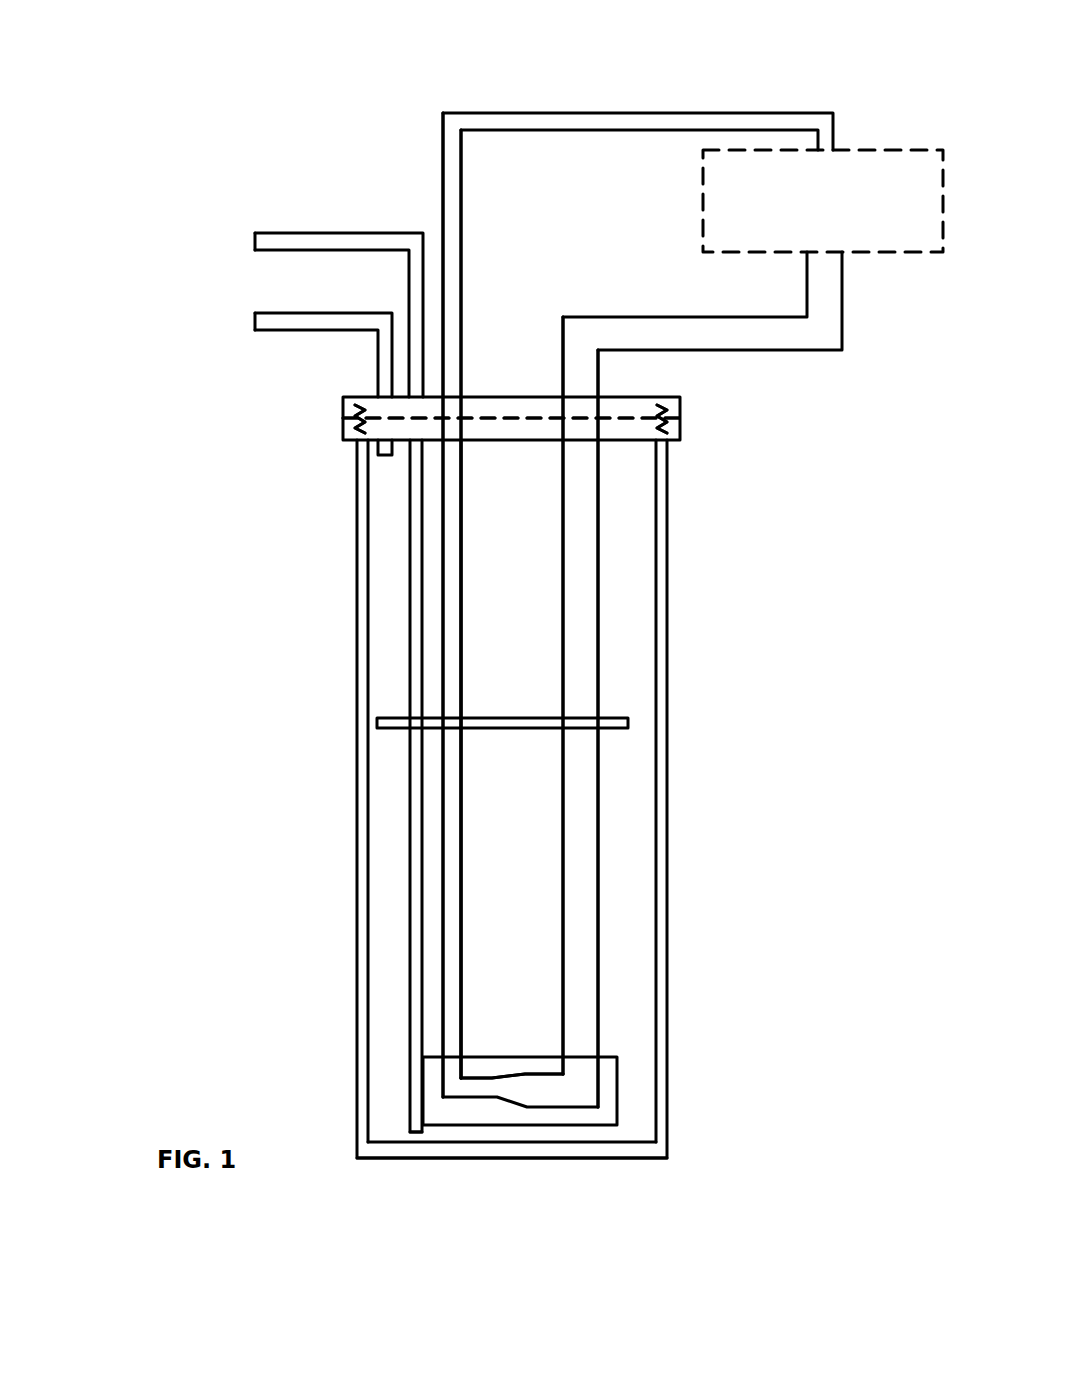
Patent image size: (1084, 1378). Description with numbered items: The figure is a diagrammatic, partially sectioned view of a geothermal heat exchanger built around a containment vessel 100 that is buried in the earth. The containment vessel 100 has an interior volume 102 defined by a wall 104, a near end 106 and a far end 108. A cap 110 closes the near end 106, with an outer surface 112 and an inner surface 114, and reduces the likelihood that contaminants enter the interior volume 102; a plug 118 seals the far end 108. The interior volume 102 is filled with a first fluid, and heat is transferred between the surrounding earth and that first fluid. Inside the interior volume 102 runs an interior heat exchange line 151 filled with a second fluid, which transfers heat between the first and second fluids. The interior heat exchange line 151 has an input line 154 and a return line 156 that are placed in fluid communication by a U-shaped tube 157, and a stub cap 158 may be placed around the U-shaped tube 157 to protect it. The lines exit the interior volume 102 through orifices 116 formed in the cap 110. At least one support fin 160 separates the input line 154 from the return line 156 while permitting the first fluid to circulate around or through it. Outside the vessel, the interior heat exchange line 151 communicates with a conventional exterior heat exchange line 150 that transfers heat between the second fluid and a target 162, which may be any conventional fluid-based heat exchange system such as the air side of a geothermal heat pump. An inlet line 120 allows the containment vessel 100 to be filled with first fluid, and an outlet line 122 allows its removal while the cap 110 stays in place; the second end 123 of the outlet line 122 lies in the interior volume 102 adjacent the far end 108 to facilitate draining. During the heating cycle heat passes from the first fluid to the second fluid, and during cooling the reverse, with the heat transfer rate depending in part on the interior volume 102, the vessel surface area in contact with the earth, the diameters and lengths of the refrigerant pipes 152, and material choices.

The containment vessel 100 is at (260, 685).
The interior volume 102 is at (628, 857).
The wall 104 is at (663, 933).
The near end 106 is at (622, 418).
The far end 108 is at (632, 1137).
The cap 110 is at (343, 412).
The outer surface 112 is at (483, 400).
The inner surface 114 is at (510, 418).
The orifices 116 is at (440, 400).
The plug 118 is at (393, 1150).
The inlet line 120 is at (290, 318).
The outlet line 122 is at (293, 240).
The second end 123 is at (420, 1132).
The exterior heat exchange line 150 is at (575, 100).
The interior heat exchange line 151 is at (437, 840).
The refrigerant pipes 152 is at (585, 328).
The input line 154 is at (450, 557).
The return line 156 is at (575, 686).
The U-shaped tube 157 is at (507, 1077).
The stub cap 158 is at (483, 1068).
The support fin 160 is at (475, 718).
The target 162 is at (860, 237).